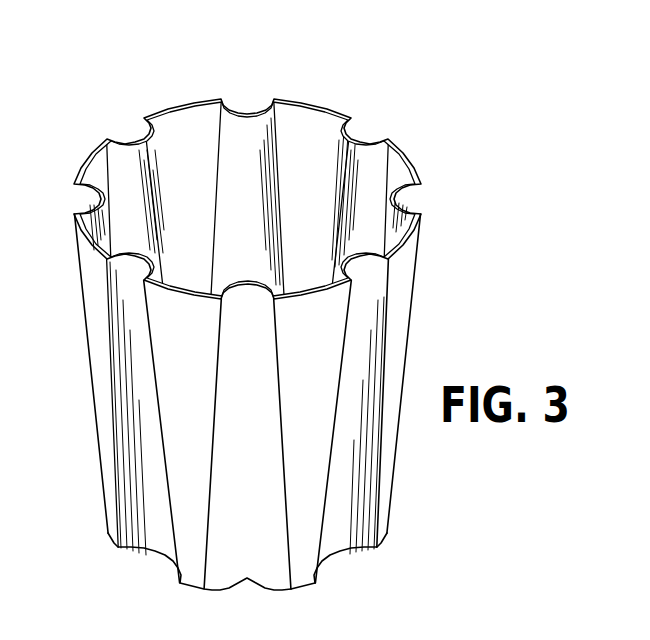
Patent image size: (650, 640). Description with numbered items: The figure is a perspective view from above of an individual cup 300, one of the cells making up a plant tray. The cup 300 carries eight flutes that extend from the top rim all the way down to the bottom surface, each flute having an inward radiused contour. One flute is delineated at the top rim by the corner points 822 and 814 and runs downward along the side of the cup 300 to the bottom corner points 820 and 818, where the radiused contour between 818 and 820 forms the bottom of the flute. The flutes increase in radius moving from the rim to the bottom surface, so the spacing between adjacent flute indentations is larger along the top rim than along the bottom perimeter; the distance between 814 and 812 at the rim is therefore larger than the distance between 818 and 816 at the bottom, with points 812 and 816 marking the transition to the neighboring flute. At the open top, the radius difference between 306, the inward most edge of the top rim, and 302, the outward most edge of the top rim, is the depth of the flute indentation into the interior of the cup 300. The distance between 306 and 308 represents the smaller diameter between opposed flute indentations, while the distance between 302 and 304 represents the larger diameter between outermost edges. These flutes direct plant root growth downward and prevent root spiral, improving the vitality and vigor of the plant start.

The cup 300 is at (148, 88).
The top rim outward most edge 302 is at (311, 103).
The top rim outermost edge point 304 is at (178, 291).
The top rim inward most edge 306 is at (367, 138).
The top rim flute indentation point 308 is at (127, 263).
The top corner point 812 is at (275, 302).
The top corner point 814 is at (385, 283).
The bottom corner point 816 is at (291, 593).
The bottom corner point 818 is at (321, 584).
The bottom corner point 820 is at (381, 549).
The top corner point 822 is at (392, 259).